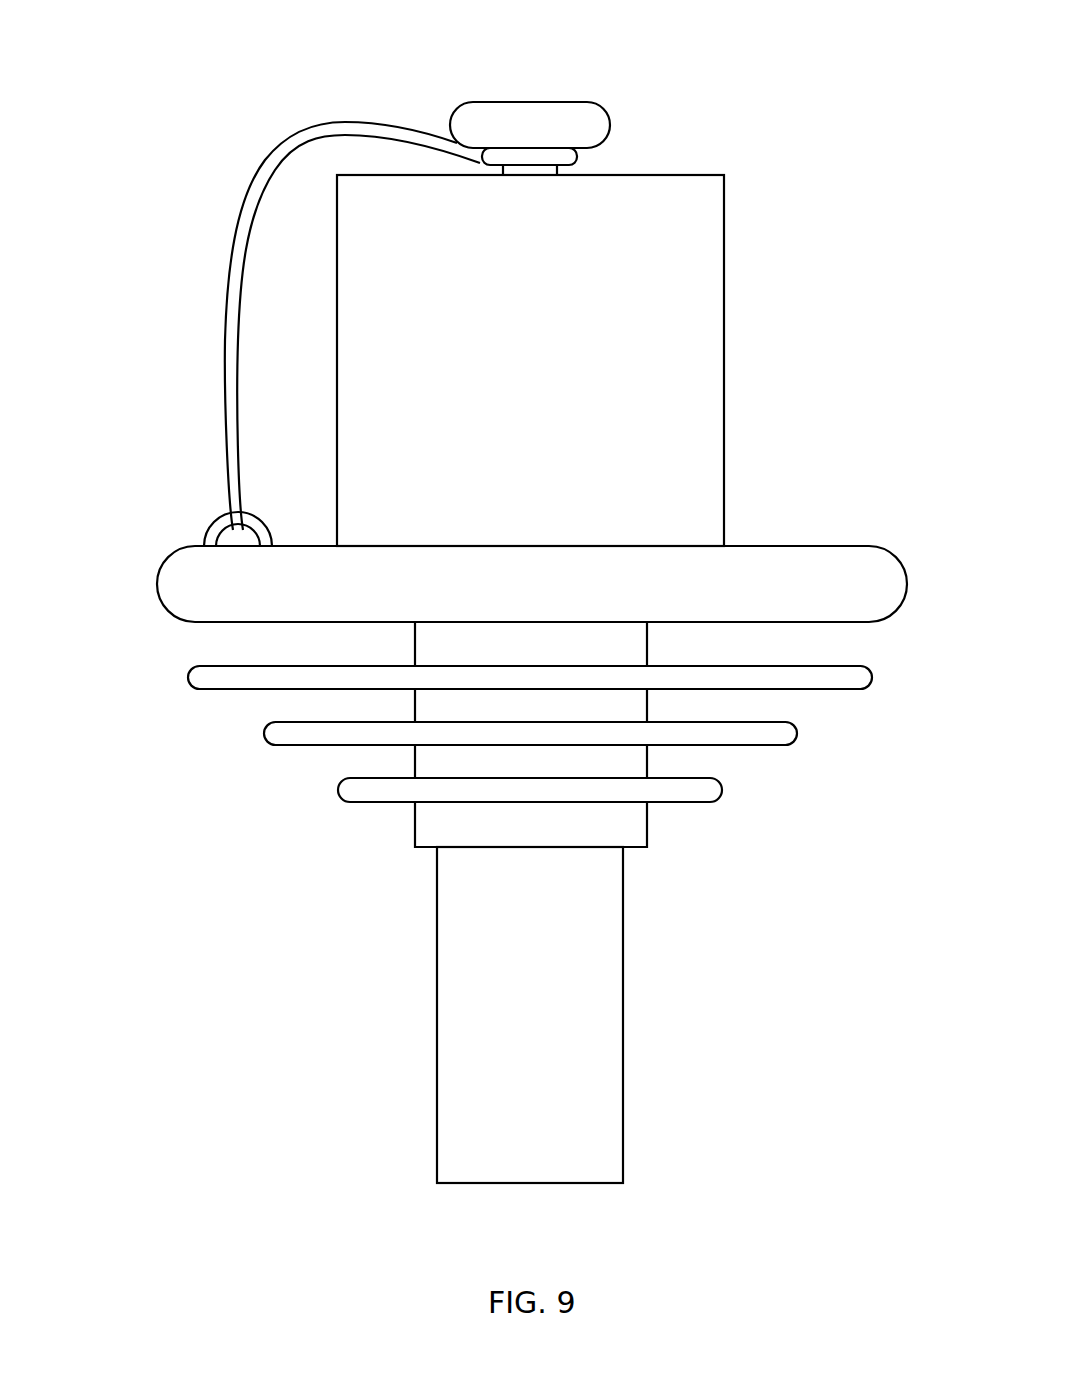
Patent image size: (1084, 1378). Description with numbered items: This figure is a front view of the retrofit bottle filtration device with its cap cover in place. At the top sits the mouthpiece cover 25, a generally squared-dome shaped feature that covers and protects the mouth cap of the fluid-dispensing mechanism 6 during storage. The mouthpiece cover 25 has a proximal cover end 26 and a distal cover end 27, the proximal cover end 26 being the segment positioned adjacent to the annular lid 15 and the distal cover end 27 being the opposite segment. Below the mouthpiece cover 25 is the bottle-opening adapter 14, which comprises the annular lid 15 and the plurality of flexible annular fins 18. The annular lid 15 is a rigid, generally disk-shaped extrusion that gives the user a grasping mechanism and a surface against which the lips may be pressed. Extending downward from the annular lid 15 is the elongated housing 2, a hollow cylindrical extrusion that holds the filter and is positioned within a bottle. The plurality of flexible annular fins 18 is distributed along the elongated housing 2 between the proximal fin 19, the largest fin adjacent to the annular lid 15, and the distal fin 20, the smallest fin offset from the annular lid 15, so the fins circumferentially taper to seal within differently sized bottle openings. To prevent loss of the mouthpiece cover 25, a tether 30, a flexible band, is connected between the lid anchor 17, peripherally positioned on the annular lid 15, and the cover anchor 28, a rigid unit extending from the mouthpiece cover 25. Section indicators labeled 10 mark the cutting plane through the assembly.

The elongated housing 2 is at (448, 1023).
The fluid-dispensing mechanism 6 is at (896, 385).
The section line FIG. 10 is at (530, 100).
The bottle-opening adapter 14 is at (155, 418).
The annular lid 15 is at (868, 570).
The lid anchor 17 is at (213, 527).
The plurality of flexible annular fins 18 is at (240, 804).
The proximal fin 19 is at (215, 685).
The distal fin 20 is at (363, 795).
The mouthpiece cover 25 is at (548, 382).
The proximal cover end 26 is at (700, 492).
The distal cover end 27 is at (706, 235).
The cover anchor 28 is at (495, 112).
The tether 30 is at (235, 263).